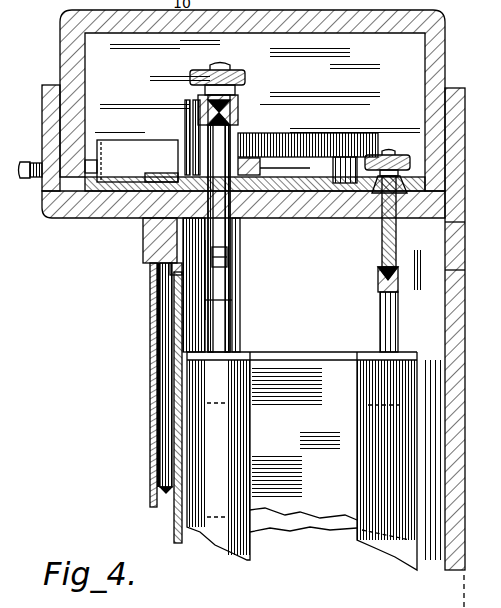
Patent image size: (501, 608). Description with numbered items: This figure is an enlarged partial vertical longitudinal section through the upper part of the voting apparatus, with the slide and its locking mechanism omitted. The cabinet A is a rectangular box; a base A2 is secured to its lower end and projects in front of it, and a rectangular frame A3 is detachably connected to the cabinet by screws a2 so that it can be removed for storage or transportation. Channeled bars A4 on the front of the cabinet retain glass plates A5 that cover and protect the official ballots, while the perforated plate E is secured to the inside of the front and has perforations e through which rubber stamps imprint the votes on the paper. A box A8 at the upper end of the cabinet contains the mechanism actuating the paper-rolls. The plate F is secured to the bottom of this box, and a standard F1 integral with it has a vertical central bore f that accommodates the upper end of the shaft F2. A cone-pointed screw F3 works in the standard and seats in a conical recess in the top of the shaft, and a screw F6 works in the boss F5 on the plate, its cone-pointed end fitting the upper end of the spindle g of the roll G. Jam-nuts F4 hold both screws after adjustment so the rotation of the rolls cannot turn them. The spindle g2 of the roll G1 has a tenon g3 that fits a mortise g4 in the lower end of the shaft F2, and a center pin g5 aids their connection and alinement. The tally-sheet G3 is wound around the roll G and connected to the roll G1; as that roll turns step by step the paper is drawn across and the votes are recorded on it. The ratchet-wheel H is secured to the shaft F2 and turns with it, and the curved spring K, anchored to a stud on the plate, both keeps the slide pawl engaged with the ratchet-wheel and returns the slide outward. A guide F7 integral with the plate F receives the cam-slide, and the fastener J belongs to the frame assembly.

The cabinet A is at (252, 143).
The base A2 is at (440, 28).
The rectangular frame A3 is at (44, 220).
The screws a2 is at (445, 162).
The screw J is at (40, 122).
The box A8 is at (255, 105).
The cone-pointed screw F3 is at (100, 107).
The guide F7 is at (131, 161).
The jam-nuts F4 is at (245, 78).
The standard F1 is at (240, 108).
The plate F is at (312, 200).
The vertical central bore f is at (242, 120).
The ratchet-wheel H is at (258, 173).
The curved spring K is at (318, 150).
The screw F6 is at (379, 235).
The boss F5 is at (403, 219).
The spindle g is at (383, 315).
The channeled bars A4 is at (148, 240).
The glass plates A5 is at (151, 341).
The perforated plate E is at (182, 540).
The perforations e is at (174, 510).
The shaft F2 is at (230, 243).
The center pin g5 is at (228, 250).
The tenon g3 is at (235, 267).
The spindle g2 is at (222, 298).
The mortise g4 is at (213, 252).
The tally-sheet G3 is at (315, 456).
The roll G1 is at (218, 456).
The roll G is at (377, 467).